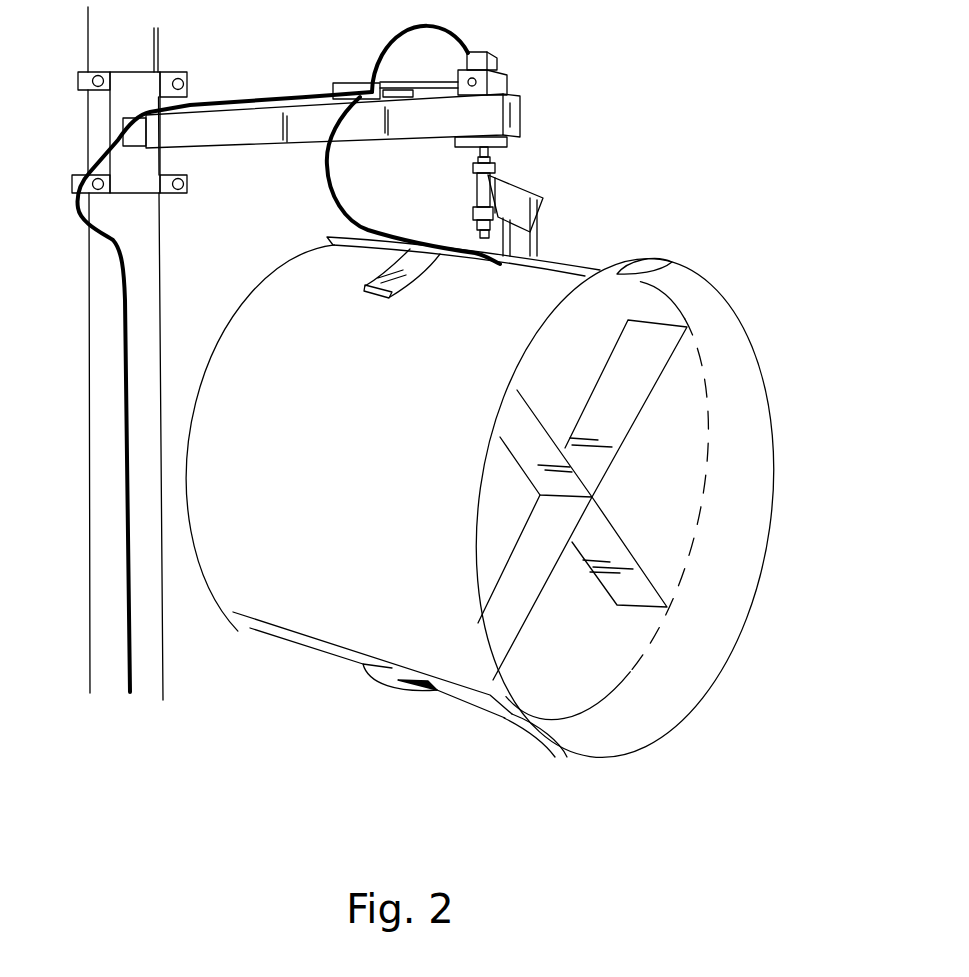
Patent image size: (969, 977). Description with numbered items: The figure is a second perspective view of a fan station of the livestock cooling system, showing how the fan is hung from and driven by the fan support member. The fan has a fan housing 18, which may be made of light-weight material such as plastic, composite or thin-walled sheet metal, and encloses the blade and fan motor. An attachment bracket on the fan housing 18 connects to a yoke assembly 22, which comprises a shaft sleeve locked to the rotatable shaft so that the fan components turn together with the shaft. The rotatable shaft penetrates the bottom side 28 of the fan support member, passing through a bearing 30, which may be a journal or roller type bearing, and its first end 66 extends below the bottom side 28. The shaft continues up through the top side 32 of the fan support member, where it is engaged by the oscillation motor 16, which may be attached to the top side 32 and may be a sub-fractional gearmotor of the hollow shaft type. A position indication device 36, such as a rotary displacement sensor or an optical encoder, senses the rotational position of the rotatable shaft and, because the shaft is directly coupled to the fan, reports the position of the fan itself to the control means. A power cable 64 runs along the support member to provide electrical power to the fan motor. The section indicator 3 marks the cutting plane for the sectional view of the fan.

The oscillation motor 16 is at (507, 78).
The fan housing 18 is at (331, 474).
The yoke assembly 22 is at (578, 217).
The bottom side 28 is at (226, 153).
The bearing 30 is at (512, 140).
The top side 32 is at (512, 93).
The position indication device 36 is at (486, 52).
The power cable 64 is at (325, 165).
The first end 66 is at (473, 166).
The section line 3- 3 is at (243, 343).